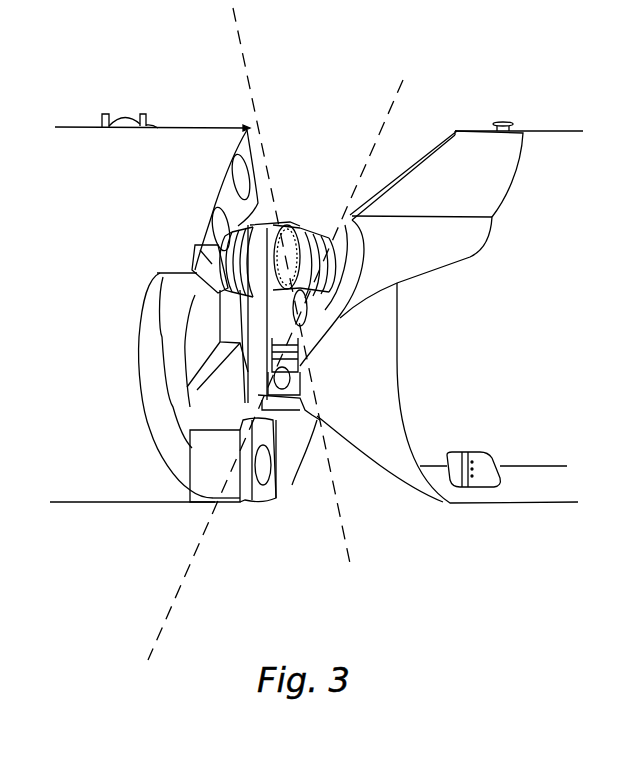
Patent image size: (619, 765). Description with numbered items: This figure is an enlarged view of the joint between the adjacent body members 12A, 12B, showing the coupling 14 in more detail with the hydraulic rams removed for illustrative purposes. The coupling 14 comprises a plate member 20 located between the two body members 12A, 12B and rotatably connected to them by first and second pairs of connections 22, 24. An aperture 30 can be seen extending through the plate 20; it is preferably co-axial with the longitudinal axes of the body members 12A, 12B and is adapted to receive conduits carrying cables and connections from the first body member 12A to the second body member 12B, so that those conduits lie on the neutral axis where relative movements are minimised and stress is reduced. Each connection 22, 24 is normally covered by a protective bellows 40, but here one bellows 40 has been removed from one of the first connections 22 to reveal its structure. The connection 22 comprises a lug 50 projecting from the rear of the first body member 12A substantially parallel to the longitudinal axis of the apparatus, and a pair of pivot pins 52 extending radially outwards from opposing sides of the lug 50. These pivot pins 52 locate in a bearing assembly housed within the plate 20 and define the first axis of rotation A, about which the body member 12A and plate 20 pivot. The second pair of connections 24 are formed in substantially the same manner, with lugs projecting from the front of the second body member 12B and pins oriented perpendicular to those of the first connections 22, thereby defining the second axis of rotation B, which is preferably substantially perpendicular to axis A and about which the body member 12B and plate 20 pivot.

The first body member 12A is at (565, 128).
The second body member 12B is at (193, 140).
The coupling 14 is at (291, 204).
The plate member 20 is at (258, 318).
The first connection 22 is at (287, 422).
The second connection 24 is at (217, 294).
The aperture 30 is at (300, 316).
The protective bellows 40 is at (243, 243).
The lug 50 is at (300, 376).
The pivot pin 52 is at (265, 397).
The first axis of rotation A is at (402, 90).
The second axis of rotation B is at (238, 38).